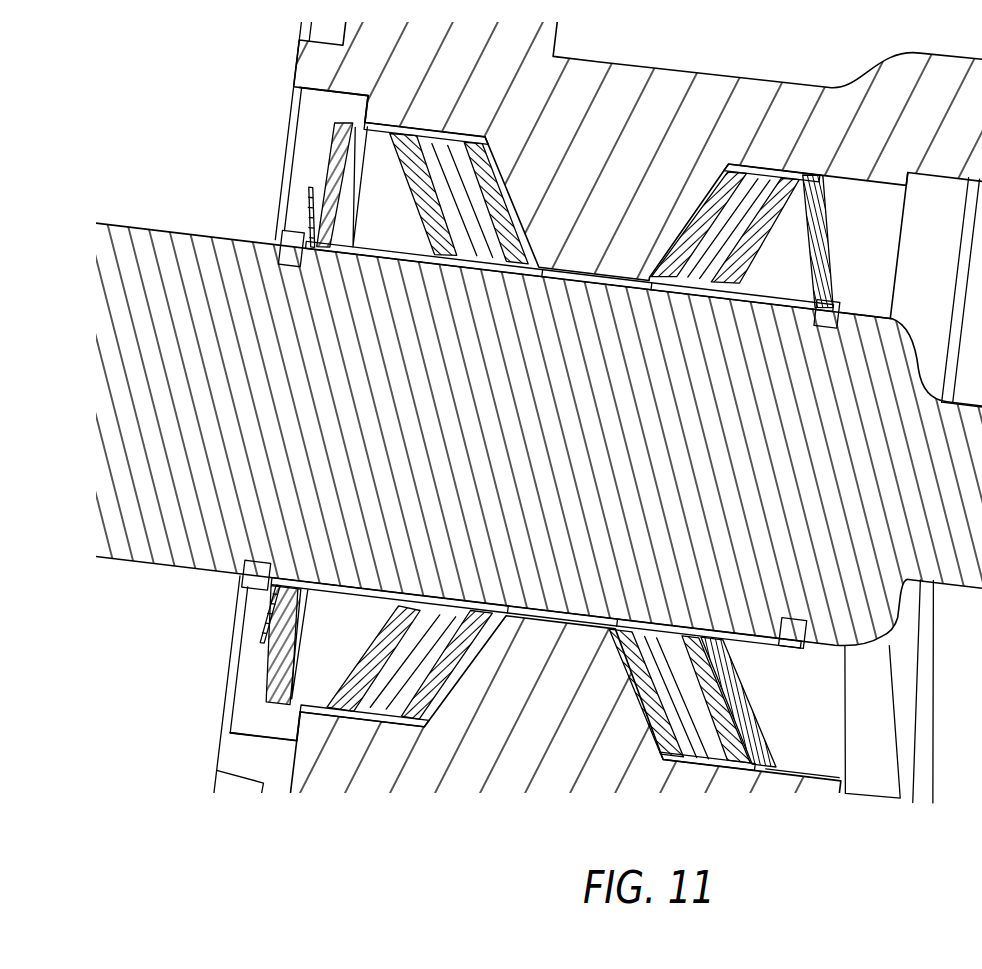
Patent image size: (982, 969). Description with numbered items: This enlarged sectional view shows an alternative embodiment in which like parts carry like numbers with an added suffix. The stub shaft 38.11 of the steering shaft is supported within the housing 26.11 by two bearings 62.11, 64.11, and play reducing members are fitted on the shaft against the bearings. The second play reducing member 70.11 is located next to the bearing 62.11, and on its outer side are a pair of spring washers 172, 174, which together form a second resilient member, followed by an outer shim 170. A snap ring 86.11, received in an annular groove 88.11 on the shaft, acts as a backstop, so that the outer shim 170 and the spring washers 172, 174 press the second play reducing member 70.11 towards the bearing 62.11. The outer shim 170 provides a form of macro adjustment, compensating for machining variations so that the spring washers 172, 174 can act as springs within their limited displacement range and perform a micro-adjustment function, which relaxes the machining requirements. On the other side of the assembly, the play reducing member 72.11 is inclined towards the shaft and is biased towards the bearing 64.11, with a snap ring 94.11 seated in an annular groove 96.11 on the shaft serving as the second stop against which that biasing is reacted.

The housing 26.11 is at (383, 760).
The stub shaft 38.11 is at (547, 575).
The bearing 62.11 is at (443, 118).
The bearing 64.11 is at (767, 150).
The second play reducing member 70.11 is at (392, 123).
The play reducing member 72.11 is at (820, 175).
The snap ring 86.11 is at (305, 248).
The annular groove 88.11 is at (293, 265).
The snap ring 94.11 is at (817, 313).
The annular groove 96.11 is at (827, 330).
The outer shim 170 is at (303, 195).
The spring washer 172 is at (337, 143).
The spring washer 174 is at (360, 123).